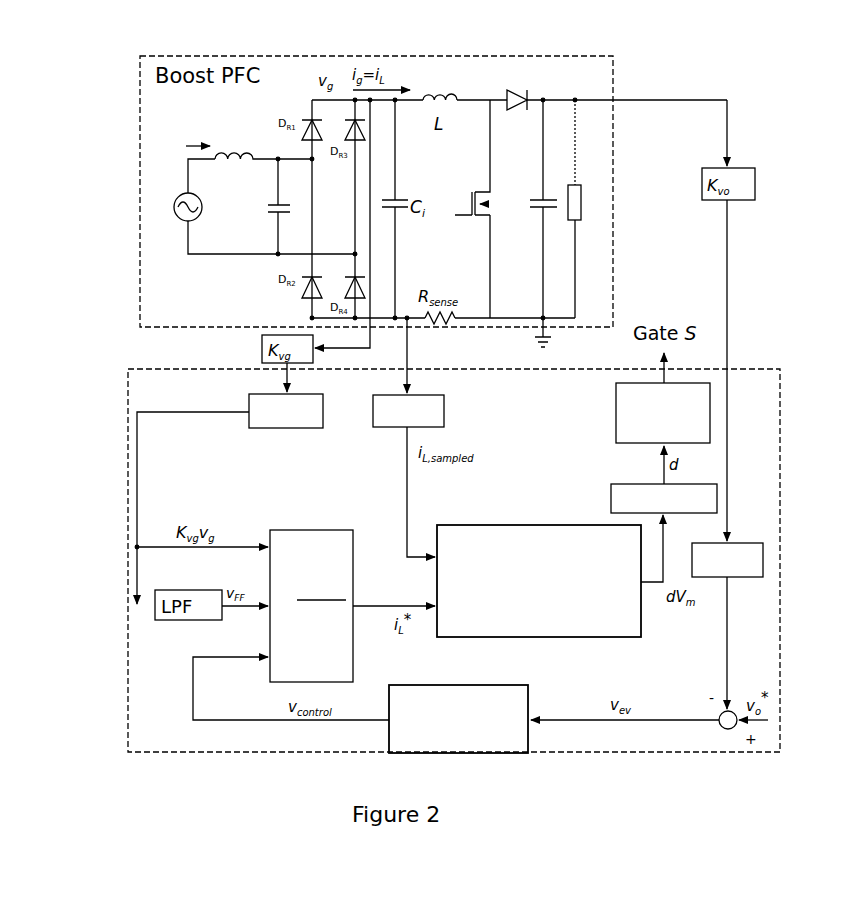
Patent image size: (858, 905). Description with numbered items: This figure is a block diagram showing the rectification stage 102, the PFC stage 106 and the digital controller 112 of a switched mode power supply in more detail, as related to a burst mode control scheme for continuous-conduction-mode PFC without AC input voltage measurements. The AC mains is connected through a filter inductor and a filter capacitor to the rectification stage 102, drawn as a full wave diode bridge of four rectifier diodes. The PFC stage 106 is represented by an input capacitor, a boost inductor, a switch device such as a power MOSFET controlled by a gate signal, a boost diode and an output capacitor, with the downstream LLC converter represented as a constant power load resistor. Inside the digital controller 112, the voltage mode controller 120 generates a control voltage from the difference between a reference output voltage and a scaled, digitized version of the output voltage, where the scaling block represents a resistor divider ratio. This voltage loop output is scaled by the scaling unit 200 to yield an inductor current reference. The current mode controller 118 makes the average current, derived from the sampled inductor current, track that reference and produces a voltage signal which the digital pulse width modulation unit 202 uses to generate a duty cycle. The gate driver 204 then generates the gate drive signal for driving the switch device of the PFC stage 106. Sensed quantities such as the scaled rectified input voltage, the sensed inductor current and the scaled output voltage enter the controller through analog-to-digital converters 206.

The rectification stage 102 is at (178, 196).
The PFC stage 106 is at (514, 251).
The digital controller 112 is at (454, 560).
The current mode controller 118 is at (539, 581).
The voltage mode controller 120 is at (458, 685).
The scaling unit 200 is at (310, 529).
The digital pulse width modulation unit 202 is at (615, 482).
The gate driver 204 is at (616, 402).
The analog-to-digital converter 206 is at (287, 432).